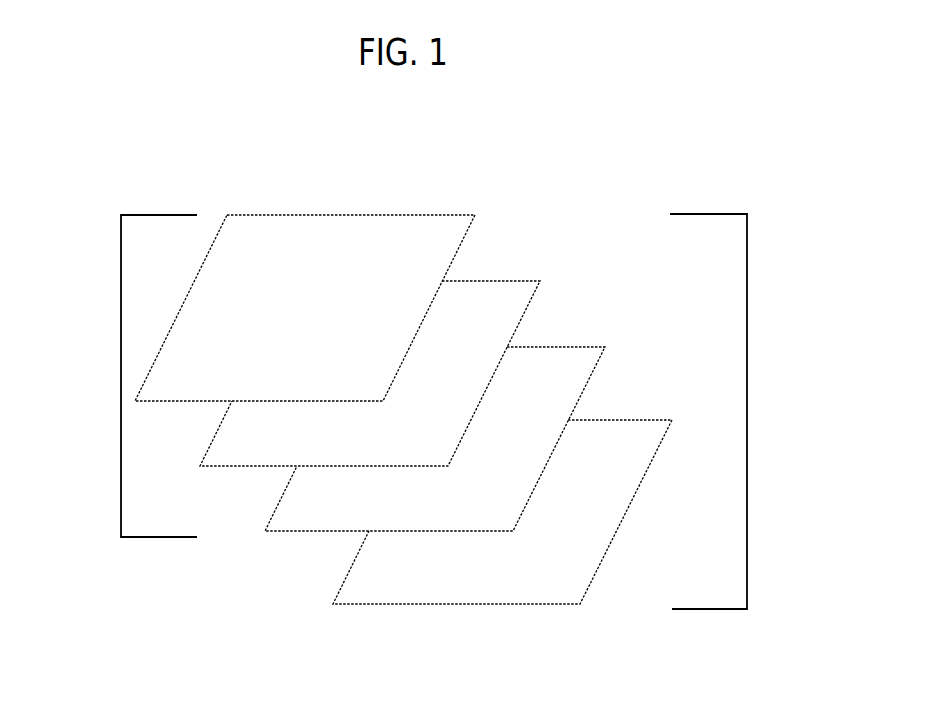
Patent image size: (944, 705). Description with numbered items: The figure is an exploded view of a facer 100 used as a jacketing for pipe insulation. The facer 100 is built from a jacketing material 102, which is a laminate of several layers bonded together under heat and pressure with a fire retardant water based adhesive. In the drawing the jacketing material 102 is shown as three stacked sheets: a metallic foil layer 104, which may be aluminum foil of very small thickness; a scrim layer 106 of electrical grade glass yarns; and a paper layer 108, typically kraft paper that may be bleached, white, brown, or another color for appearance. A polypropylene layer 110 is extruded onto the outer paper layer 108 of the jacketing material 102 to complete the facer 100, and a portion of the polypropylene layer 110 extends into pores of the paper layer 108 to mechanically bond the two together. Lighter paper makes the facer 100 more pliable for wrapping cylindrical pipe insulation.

The facer 100 is at (747, 412).
The jacketing material 102 is at (121, 375).
The metallic foil layer 104 is at (265, 215).
The scrim layer 106 is at (483, 281).
The paper layer 108 is at (555, 347).
The polypropylene layer 110 is at (363, 543).